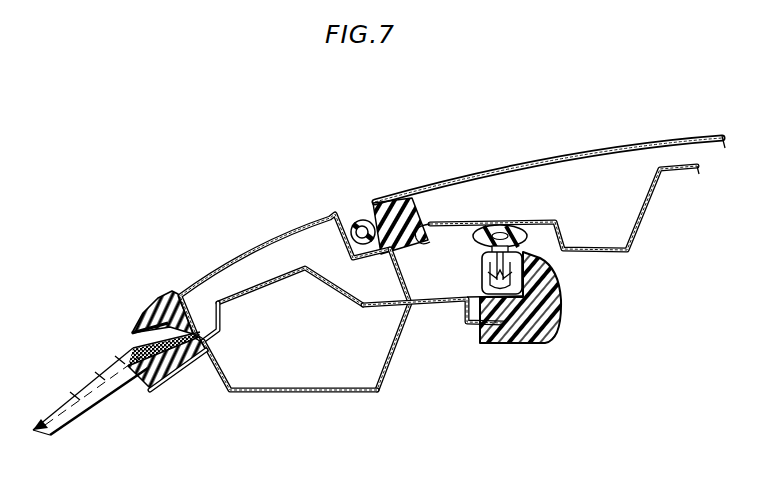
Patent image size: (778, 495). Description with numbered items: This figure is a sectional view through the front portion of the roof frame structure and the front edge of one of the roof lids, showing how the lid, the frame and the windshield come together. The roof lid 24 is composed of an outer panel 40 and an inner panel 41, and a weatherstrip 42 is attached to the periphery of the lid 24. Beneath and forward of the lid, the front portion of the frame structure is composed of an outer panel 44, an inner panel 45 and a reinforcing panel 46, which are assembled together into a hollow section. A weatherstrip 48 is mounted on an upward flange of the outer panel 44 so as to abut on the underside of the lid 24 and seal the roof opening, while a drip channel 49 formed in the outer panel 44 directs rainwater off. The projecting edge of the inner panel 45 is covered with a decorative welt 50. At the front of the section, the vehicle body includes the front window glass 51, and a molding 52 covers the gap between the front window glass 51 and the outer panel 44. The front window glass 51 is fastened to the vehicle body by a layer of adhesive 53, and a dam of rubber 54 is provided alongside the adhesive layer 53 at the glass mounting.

The roof lid 24 is at (565, 146).
The outer panel 40 is at (550, 122).
The inner panel 41 is at (640, 224).
The weatherstrip 42 is at (356, 221).
The outer panel 44 is at (281, 238).
The inner panel 45 is at (338, 391).
The reinforcing panel 46 is at (365, 305).
The weatherstrip 48 is at (529, 247).
The drip channel 49 is at (445, 287).
The decorative welt 50 is at (550, 312).
The front window glass 51 is at (70, 392).
The molding 52 is at (165, 291).
The layer of adhesive 53 is at (178, 362).
The dam of rubber 54 is at (137, 372).